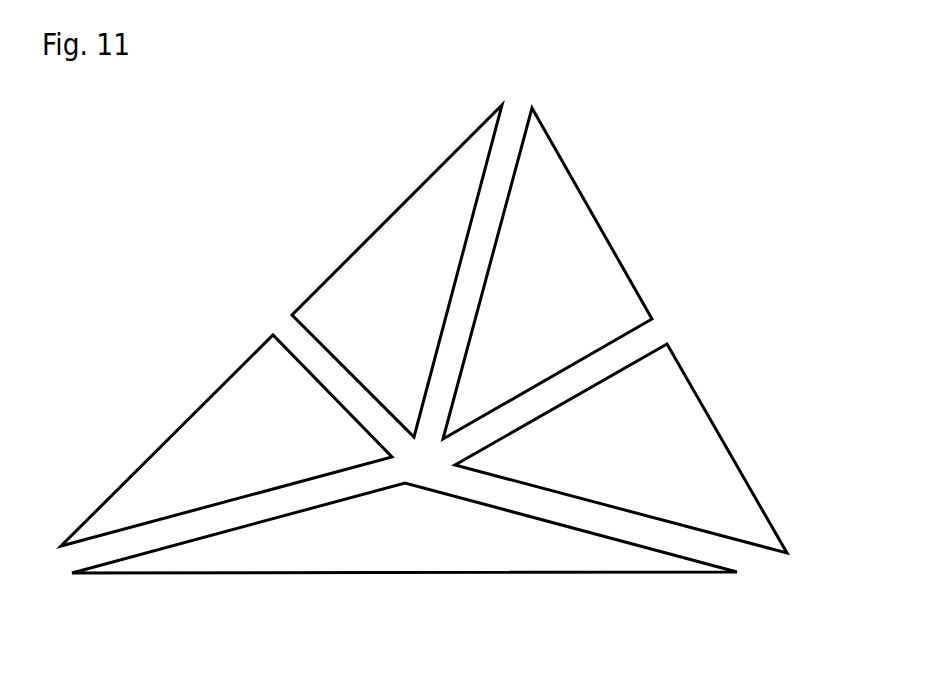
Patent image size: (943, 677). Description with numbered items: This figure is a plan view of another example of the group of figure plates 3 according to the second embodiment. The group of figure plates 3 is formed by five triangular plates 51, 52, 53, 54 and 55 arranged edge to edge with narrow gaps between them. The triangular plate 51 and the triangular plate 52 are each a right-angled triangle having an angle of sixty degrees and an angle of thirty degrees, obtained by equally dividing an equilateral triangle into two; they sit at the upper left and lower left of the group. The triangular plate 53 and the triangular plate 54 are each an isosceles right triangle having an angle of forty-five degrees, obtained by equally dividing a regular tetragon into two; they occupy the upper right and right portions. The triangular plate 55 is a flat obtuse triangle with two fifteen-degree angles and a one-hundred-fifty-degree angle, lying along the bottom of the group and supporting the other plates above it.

The group of figure plates 3 is at (722, 205).
The triangular plate 51 is at (375, 230).
The triangular plate 52 is at (165, 438).
The triangular plate 53 is at (594, 210).
The triangular plate 54 is at (730, 448).
The triangular plate 55 is at (405, 575).